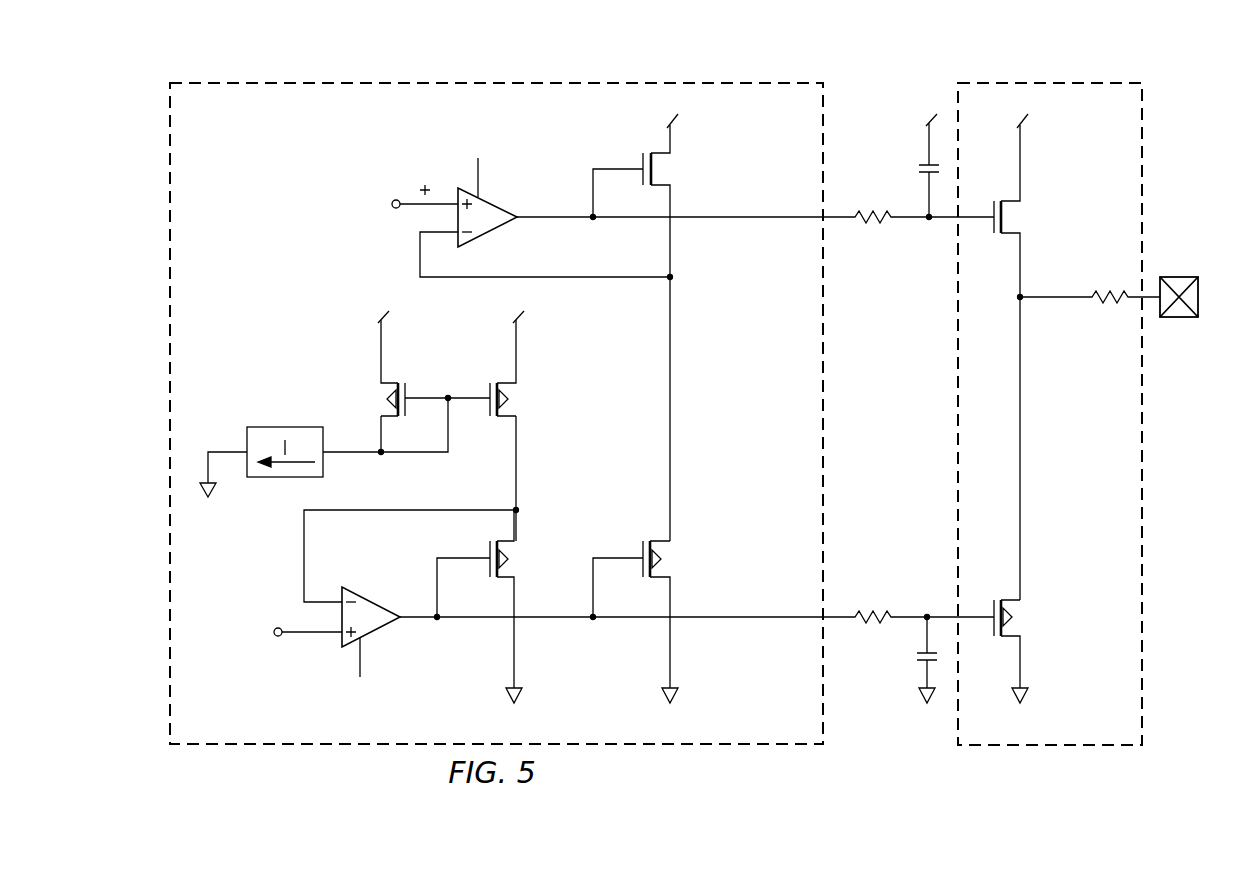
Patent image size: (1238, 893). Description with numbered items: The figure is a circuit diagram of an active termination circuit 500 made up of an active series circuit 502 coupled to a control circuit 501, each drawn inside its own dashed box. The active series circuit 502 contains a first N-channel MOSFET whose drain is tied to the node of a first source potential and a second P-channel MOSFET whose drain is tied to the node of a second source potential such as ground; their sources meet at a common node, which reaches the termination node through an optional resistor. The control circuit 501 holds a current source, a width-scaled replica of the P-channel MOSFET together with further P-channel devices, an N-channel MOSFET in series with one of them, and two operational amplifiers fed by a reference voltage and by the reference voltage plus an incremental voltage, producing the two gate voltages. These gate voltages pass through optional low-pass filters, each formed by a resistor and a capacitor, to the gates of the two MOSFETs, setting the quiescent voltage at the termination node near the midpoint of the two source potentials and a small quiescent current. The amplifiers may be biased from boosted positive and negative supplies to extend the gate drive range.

The active termination circuit 500 is at (906, 86).
The control circuit 501 is at (167, 468).
The active series circuit 502 is at (1146, 470).